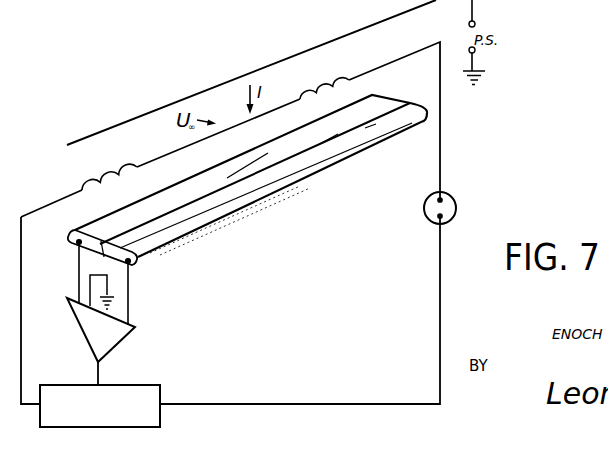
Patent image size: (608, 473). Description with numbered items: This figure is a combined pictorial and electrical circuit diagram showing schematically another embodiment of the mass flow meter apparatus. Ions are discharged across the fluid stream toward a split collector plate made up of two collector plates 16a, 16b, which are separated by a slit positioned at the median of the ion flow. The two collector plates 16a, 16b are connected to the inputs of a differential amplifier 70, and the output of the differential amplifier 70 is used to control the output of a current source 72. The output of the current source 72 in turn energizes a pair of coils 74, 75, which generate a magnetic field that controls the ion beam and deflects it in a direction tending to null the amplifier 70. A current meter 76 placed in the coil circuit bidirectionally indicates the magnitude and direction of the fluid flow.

The collector plate 16a is at (100, 220).
The collector plate 16b is at (166, 250).
The differential amplifier 70 is at (120, 342).
The current source 72 is at (163, 418).
The coil 74 is at (118, 167).
The coil 75 is at (343, 76).
The current meter 76 is at (457, 208).